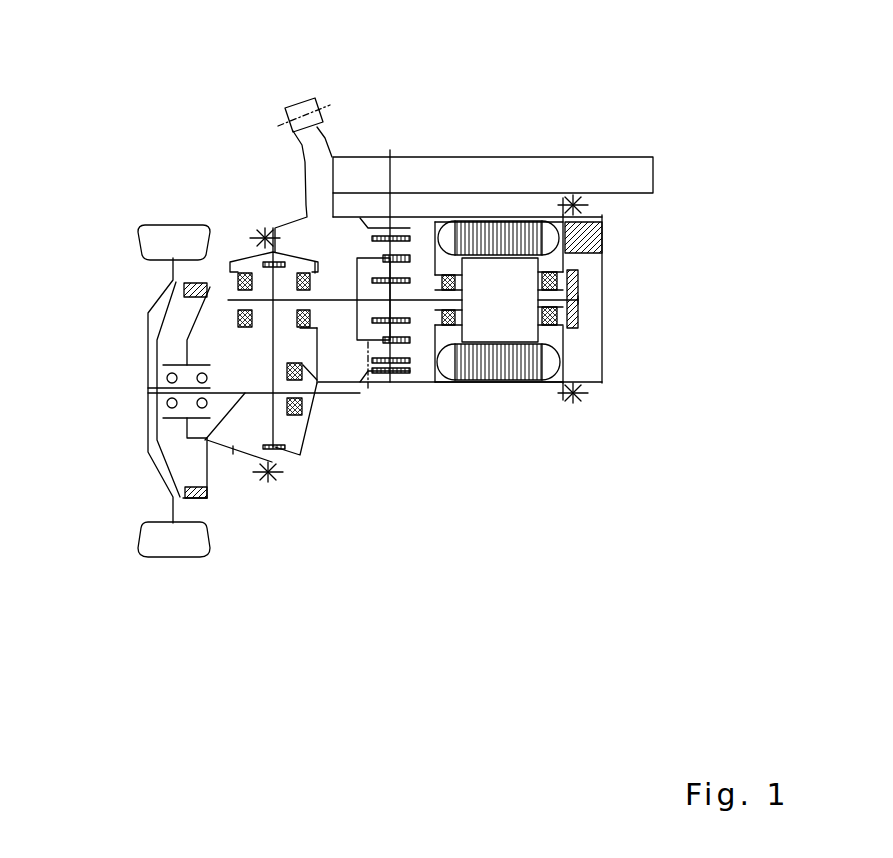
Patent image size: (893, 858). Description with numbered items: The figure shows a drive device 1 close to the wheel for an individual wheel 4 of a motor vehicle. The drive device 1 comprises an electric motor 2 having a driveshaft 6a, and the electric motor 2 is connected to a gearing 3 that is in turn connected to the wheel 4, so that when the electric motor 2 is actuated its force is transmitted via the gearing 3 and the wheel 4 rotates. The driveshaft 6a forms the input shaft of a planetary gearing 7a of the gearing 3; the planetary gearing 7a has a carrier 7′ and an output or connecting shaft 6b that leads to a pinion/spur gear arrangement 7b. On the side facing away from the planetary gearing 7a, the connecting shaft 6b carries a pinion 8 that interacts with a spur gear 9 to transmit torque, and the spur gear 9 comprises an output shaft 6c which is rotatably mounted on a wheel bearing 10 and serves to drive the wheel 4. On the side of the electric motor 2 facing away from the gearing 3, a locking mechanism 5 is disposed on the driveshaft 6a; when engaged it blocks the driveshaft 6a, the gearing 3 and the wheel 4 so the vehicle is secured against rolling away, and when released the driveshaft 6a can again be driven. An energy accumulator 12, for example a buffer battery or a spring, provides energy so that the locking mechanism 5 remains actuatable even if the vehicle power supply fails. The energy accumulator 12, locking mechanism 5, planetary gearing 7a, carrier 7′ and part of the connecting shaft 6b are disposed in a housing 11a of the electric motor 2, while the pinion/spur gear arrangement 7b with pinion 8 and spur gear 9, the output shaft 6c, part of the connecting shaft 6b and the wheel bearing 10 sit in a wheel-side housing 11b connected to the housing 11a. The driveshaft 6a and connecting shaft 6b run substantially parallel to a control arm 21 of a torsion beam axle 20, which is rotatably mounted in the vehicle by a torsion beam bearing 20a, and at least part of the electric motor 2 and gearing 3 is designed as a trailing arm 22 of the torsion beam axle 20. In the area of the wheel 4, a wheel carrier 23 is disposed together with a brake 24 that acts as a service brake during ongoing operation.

The drive device 1 is at (600, 515).
The electric motor 2 is at (533, 217).
The gearing 3 is at (333, 432).
The wheel 4 is at (148, 548).
The locking mechanism 5 is at (580, 288).
The driveshaft 6a is at (580, 300).
The connecting shaft 6b is at (271, 207).
The output shaft 6c is at (205, 440).
The planetary gearing 7a is at (390, 214).
The pinion/spur gear arrangement 7b is at (145, 312).
The carrier 7′ is at (368, 390).
The pinion 8 is at (206, 239).
The spur gear 9 is at (264, 513).
The wheel bearing 10 is at (150, 408).
The housing of the electric motor 11a is at (497, 383).
The wheel-side housing 11b is at (233, 450).
The energy accumulator 12 is at (605, 243).
The torsion beam axle 20 is at (470, 124).
The torsion beam bearing 20a is at (300, 101).
The control arm 21 is at (625, 180).
The trailing arm 22 is at (295, 513).
The wheel carrier 23 is at (148, 352).
The brake 24 is at (147, 277).